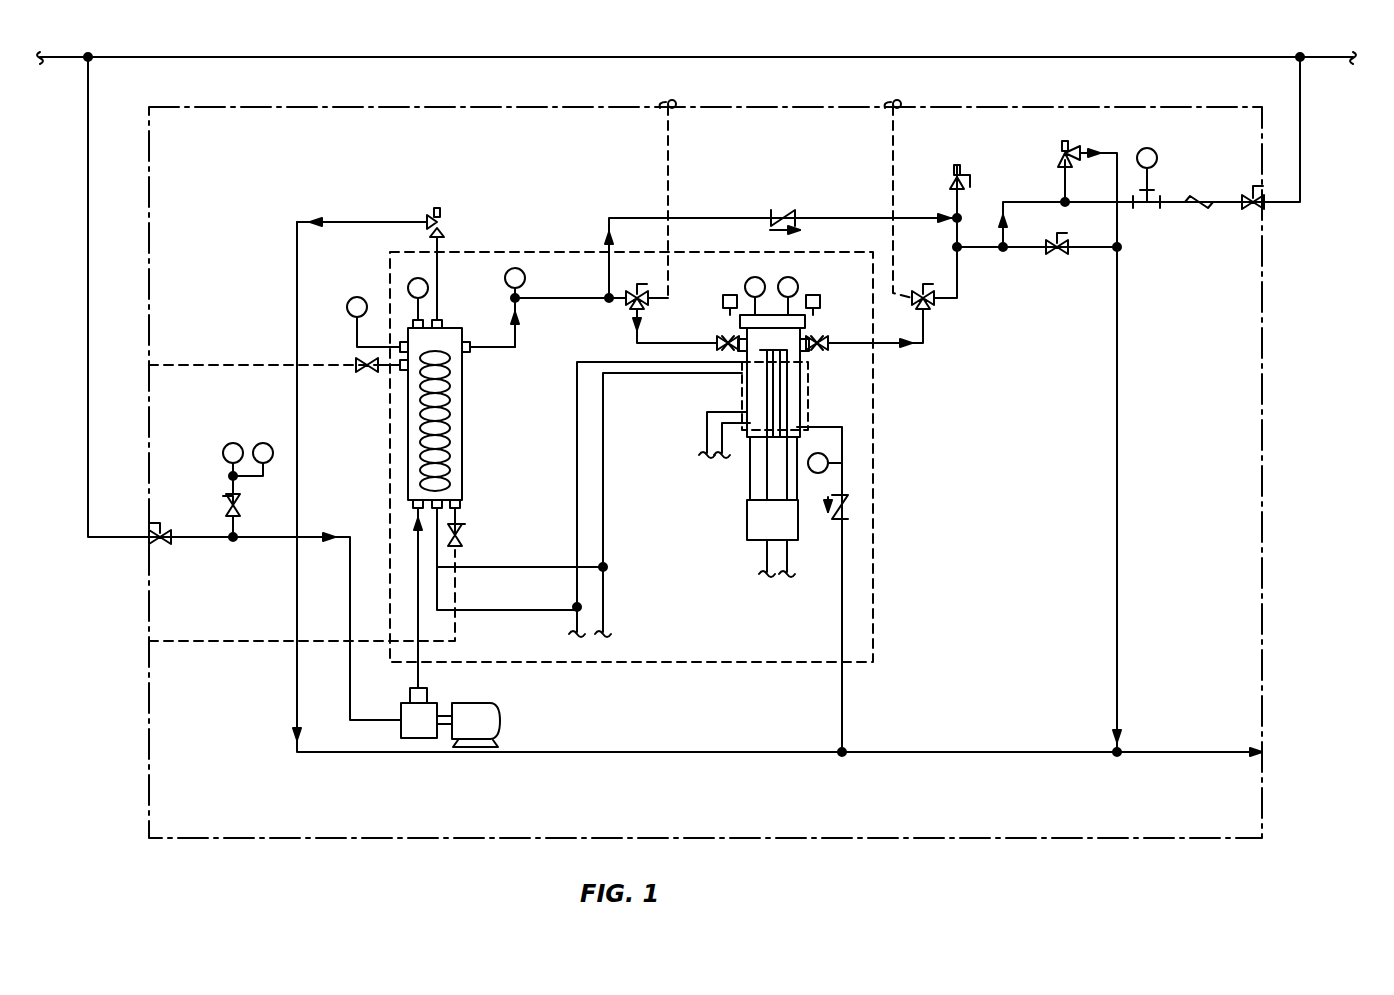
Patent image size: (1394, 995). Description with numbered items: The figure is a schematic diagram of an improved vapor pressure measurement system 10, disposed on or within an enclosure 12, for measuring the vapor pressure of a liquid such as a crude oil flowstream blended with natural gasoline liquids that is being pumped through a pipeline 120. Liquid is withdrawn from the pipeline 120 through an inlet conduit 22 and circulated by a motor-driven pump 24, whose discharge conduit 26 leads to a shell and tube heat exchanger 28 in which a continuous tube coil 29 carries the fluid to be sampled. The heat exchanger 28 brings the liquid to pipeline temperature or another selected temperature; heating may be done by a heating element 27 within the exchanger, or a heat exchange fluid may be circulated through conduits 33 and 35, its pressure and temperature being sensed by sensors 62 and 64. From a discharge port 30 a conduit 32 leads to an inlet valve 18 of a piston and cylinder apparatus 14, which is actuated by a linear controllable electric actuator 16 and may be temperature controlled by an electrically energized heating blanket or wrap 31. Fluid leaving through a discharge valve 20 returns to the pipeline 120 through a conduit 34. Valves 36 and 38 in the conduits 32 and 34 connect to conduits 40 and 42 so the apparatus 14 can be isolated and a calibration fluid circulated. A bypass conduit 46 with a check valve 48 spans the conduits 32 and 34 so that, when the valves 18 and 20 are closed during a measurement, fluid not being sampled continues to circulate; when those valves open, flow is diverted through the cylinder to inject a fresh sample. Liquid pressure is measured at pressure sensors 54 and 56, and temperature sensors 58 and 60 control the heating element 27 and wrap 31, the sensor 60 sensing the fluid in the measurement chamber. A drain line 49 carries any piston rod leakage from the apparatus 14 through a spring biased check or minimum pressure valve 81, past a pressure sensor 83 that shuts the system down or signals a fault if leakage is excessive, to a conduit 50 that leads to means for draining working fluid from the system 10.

The vapor pressure measurement system 10 is at (485, 97).
The enclosure 12 is at (340, 107).
The piston and cylinder apparatus 14 is at (818, 388).
The linear controllable electric actuator 16 is at (745, 538).
The inlet valve 18 is at (722, 340).
The discharge valve 20 is at (822, 340).
The inlet conduit 22 is at (195, 540).
The motor-driven pump 24 is at (420, 738).
The discharge conduit 26 is at (440, 578).
The heating element 27 is at (405, 500).
The heat exchanger 28 is at (465, 425).
The tube coil 29 is at (462, 493).
The discharge port 30 is at (478, 345).
The heating blanket or wrap 31 is at (738, 375).
The conduit 32 is at (500, 350).
The conduit 33 is at (190, 643).
The conduit 34 is at (1028, 200).
The conduit 35 is at (225, 365).
The valve 36 is at (630, 305).
The valve 38 is at (930, 305).
The conduit 40 is at (669, 124).
The conduit 42 is at (894, 124).
The bypass conduit 46 is at (683, 218).
The check valve 48 is at (790, 208).
The drain line 49 is at (843, 585).
The conduit 50 is at (1175, 752).
The pressure sensor 54 is at (234, 472).
The pressure sensor 56 is at (800, 285).
The temperature sensor 58 is at (526, 276).
The temperature sensor 60 is at (745, 285).
The pressure sensor 62 is at (348, 315).
The temperature sensor 64 is at (407, 290).
The spring biased check or minimum pressure valve 81 is at (852, 505).
The pressure sensor 83 is at (842, 483).
The pipeline 120 is at (966, 62).